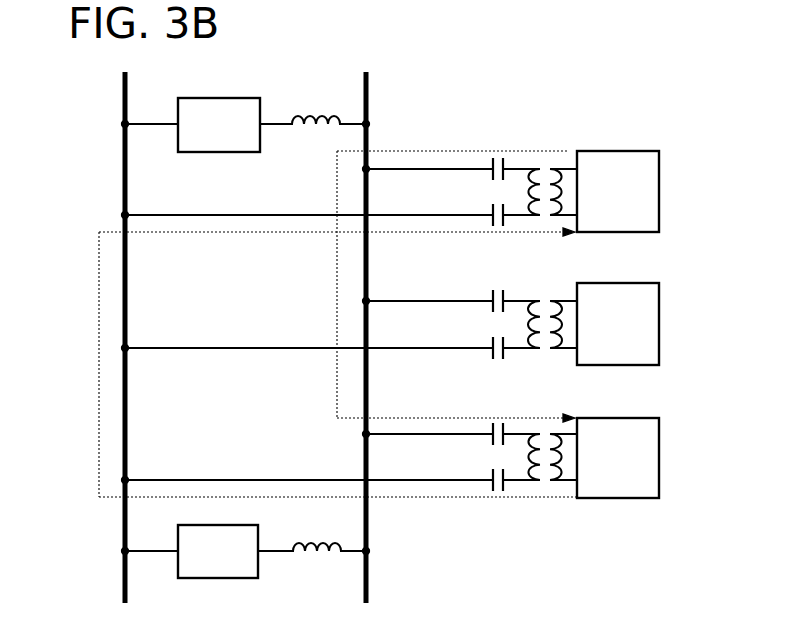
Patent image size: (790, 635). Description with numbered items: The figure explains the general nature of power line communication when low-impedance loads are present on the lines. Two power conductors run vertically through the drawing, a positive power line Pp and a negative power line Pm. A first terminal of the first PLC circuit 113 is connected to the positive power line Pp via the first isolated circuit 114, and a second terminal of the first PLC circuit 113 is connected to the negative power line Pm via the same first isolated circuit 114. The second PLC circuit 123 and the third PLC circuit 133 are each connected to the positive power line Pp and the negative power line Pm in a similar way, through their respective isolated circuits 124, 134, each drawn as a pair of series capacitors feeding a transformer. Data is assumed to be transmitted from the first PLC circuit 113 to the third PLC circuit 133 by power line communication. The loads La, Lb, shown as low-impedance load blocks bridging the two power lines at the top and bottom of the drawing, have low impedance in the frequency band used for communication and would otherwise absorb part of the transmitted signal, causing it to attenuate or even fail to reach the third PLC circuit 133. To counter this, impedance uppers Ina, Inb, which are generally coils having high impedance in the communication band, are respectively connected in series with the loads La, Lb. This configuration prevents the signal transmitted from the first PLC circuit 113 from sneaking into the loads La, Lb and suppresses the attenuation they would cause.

The negative power line Pm is at (127, 82).
The positive power line Pp is at (369, 84).
The load La is at (222, 97).
The load Lb is at (260, 537).
The impedance upper Ina is at (315, 133).
The impedance upper Inb is at (314, 560).
The first PLC circuit 113 is at (660, 167).
The first isolated circuit 114 is at (558, 133).
The second PLC circuit 123 is at (660, 300).
The isolated circuit 124 is at (558, 282).
The third PLC circuit 133 is at (660, 432).
The isolated circuit 134 is at (573, 388).